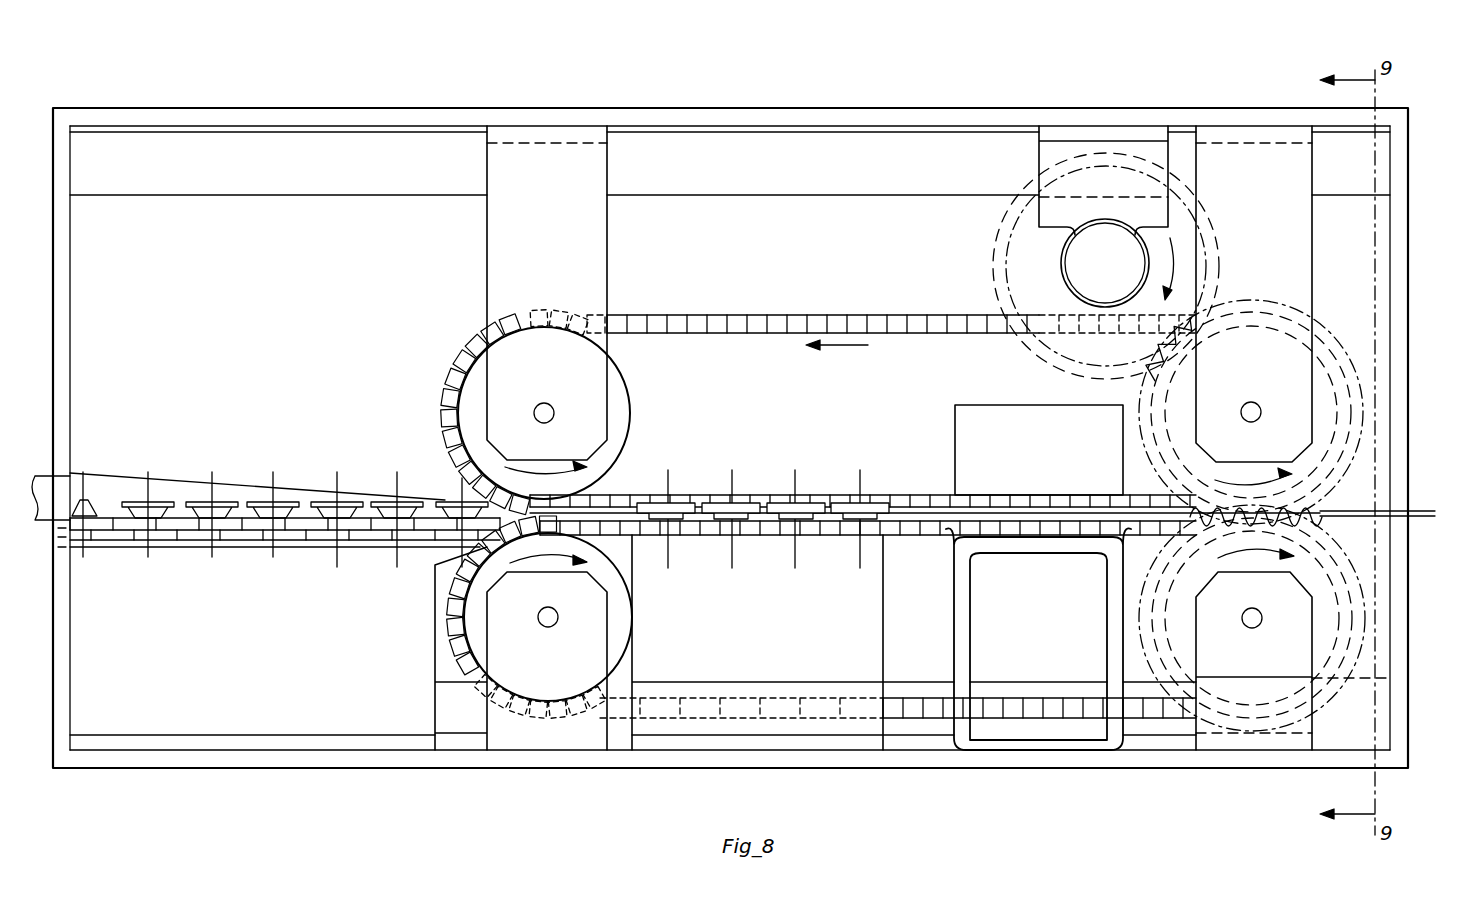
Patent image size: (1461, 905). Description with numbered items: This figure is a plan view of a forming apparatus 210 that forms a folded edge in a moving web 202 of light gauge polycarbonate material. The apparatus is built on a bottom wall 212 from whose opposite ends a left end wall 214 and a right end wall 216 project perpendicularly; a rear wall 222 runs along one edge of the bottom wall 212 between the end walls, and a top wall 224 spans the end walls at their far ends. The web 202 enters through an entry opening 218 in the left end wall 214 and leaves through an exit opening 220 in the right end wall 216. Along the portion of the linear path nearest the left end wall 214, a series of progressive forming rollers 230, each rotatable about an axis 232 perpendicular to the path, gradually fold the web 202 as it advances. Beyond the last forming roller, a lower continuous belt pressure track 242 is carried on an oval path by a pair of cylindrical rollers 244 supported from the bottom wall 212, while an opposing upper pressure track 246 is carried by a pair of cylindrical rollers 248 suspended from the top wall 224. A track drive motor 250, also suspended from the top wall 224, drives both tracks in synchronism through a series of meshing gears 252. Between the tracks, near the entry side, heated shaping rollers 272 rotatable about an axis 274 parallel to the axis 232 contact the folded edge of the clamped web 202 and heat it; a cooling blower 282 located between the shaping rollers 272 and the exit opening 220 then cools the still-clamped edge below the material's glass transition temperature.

The web 202 is at (170, 492).
The forming apparatus 210 is at (340, 778).
The bottom wall 212 is at (540, 770).
The left end wall 214 is at (72, 381).
The right end wall 216 is at (1390, 262).
The entry opening 218 is at (71, 473).
The exit opening 220 is at (1390, 516).
The rear wall 222 is at (312, 364).
The top wall 224 is at (801, 108).
The progressive forming rollers 230 is at (130, 525).
The axis 232 is at (84, 562).
The lower continuous belt pressure track 242 is at (945, 540).
The cylindrical rollers 244 is at (620, 632).
The upper continuous belt pressure track 246 is at (947, 488).
The cylindrical rollers 248 is at (632, 397).
The track drive motor 250 is at (1070, 268).
The meshing gears 252 is at (1017, 237).
The heated shaping rollers 272 is at (677, 507).
The axis 274 is at (665, 483).
The cooling blower 282 is at (1042, 398).